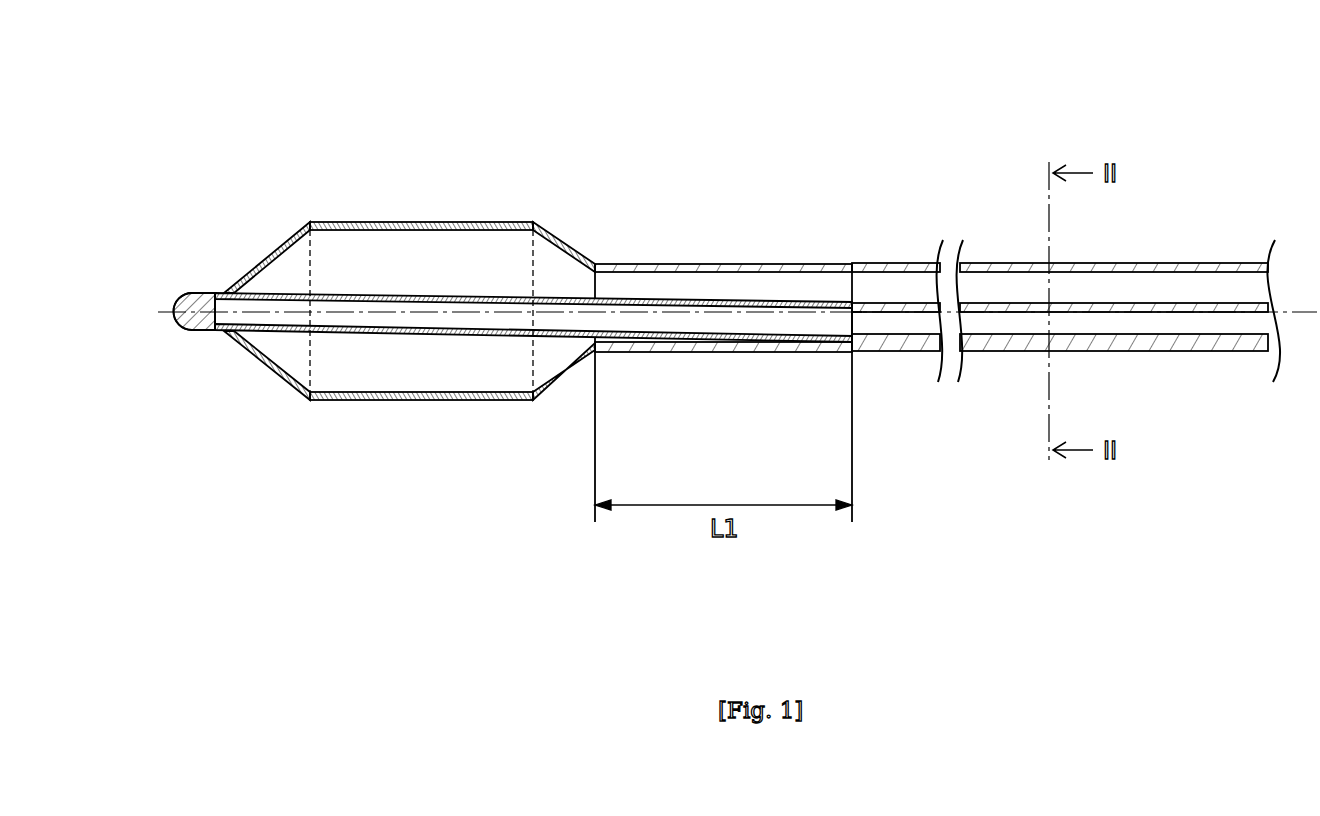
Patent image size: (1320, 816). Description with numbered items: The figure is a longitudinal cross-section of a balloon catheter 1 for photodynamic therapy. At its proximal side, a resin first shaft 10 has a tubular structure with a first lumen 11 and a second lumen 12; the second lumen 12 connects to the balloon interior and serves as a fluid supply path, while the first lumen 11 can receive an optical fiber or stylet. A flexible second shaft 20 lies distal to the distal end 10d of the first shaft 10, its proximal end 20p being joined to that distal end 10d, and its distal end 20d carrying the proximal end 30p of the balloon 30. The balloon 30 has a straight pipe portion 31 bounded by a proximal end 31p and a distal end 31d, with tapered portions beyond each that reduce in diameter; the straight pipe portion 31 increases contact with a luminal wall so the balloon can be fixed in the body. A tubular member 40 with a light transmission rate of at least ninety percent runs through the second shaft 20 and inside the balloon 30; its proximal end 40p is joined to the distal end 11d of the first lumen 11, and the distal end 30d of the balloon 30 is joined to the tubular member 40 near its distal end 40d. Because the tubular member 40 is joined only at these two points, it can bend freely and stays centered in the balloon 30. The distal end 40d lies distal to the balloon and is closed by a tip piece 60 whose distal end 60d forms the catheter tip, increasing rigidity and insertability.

The balloon catheter 1 is at (232, 158).
The first shaft 10 is at (1000, 353).
The distal end of first shaft 10d is at (850, 263).
The first lumen 11 is at (1197, 326).
The distal end of first lumen 11d is at (853, 287).
The second lumen 12 is at (1220, 285).
The second shaft 20 is at (722, 263).
The distal end of second shaft 20d is at (597, 353).
The proximal end of second shaft 20p is at (848, 358).
The balloon 30 is at (418, 222).
The distal end of balloon 30d is at (222, 290).
The proximal end of balloon 30p is at (593, 263).
The straight pipe portion 31 is at (533, 427).
The distal end of straight pipe portion 31d is at (310, 402).
The proximal end of straight pipe portion 31p is at (535, 403).
The tubular member 40 is at (278, 292).
The distal end of tubular member 40d is at (222, 333).
The proximal end of tubular member 40p is at (853, 355).
The tip piece 60 is at (177, 333).
The distal end of tip piece 60d is at (177, 293).